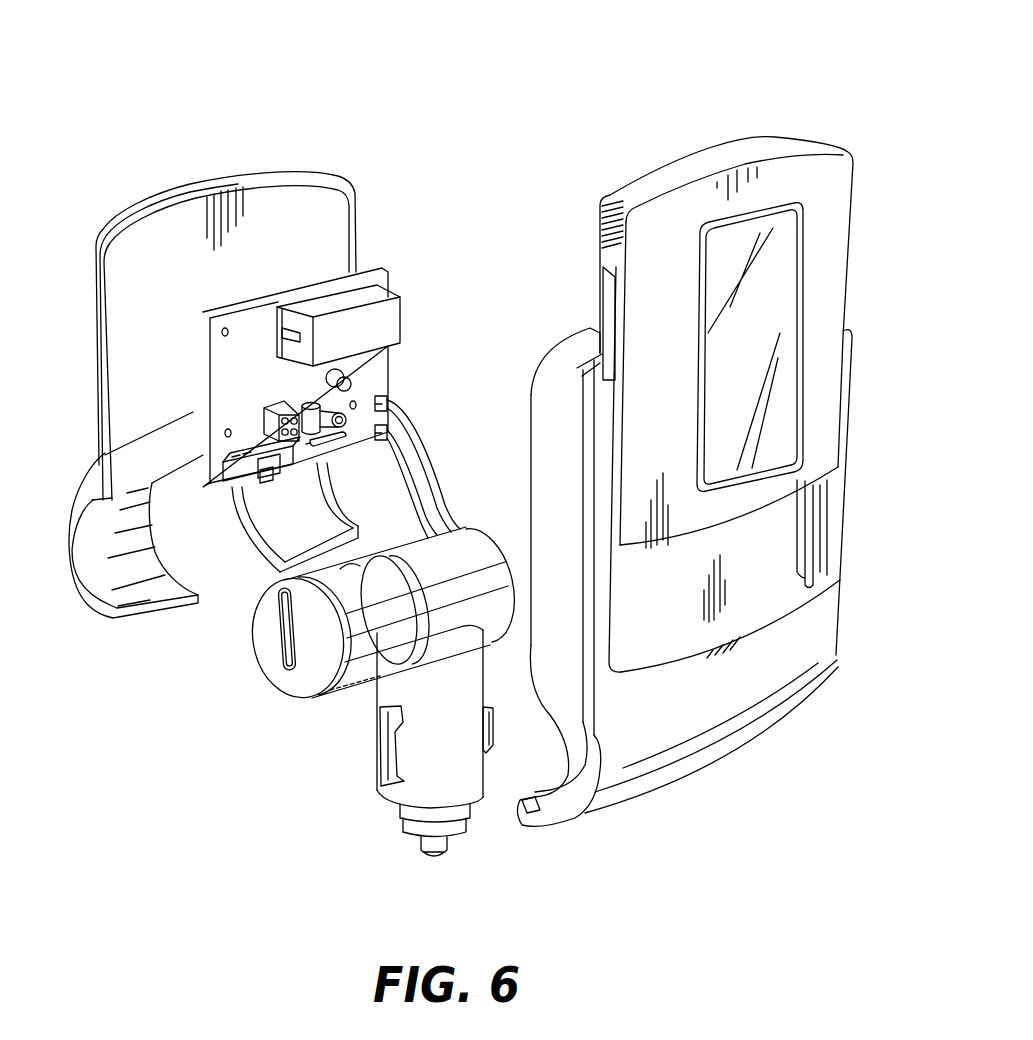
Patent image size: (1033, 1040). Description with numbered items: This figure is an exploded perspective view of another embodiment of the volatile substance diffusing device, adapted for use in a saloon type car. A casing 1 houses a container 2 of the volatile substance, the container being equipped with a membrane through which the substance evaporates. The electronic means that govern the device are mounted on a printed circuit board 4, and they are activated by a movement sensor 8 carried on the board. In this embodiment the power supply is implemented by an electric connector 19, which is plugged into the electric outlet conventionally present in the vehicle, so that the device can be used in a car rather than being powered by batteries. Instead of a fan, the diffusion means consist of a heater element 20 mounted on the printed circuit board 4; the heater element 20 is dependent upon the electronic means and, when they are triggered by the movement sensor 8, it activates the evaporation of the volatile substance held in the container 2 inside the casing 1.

The casing 1 is at (737, 717).
The container 2 is at (821, 203).
The printed circuit board 4 is at (377, 270).
The movement sensor 8 is at (273, 432).
The electric connector 19 is at (438, 767).
The heater element 20 is at (376, 328).